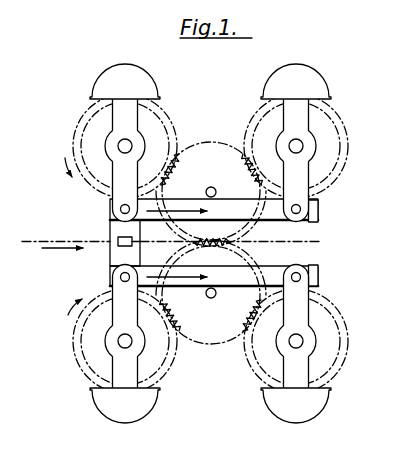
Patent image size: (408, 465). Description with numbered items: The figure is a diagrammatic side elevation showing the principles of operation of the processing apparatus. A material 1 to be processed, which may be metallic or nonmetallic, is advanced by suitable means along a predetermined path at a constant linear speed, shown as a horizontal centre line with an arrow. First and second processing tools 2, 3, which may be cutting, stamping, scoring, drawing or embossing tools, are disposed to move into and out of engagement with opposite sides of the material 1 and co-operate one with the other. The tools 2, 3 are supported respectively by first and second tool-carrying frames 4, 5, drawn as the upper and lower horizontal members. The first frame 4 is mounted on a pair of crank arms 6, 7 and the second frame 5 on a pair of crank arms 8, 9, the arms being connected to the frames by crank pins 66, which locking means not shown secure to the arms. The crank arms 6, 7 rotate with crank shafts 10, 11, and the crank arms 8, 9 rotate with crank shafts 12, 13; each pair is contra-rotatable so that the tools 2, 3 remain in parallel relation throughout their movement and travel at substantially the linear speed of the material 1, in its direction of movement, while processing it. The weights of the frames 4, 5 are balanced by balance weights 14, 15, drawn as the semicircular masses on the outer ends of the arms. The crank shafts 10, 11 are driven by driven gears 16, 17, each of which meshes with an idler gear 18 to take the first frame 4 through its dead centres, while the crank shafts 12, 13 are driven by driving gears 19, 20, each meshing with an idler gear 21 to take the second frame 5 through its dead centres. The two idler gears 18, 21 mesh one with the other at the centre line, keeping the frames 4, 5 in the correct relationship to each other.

The material 1 is at (22, 241).
The first processing tool 2 is at (110, 227).
The second processing tool 3 is at (110, 252).
The first tool-carrying frame 4 is at (319, 205).
The second tool-carrying frame 5 is at (314, 282).
The crank arm 6 is at (118, 115).
The crank arm 7 is at (302, 122).
The crank arm 8 is at (118, 314).
The crank arm 9 is at (301, 314).
The crank shaft 10 is at (118, 147).
The crank shaft 11 is at (289, 146).
The crank shaft 12 is at (118, 342).
The crank shaft 13 is at (303, 343).
The balance weight 14 is at (124, 72).
The balance weight 15 is at (138, 404).
The driven gear 16 is at (160, 123).
The driven gear 17 is at (267, 120).
The idler gear 18 is at (197, 153).
The driving gear 19 is at (90, 357).
The driving gear 20 is at (336, 364).
The idler gear 21 is at (213, 345).
The crank pins 66 is at (120, 208).